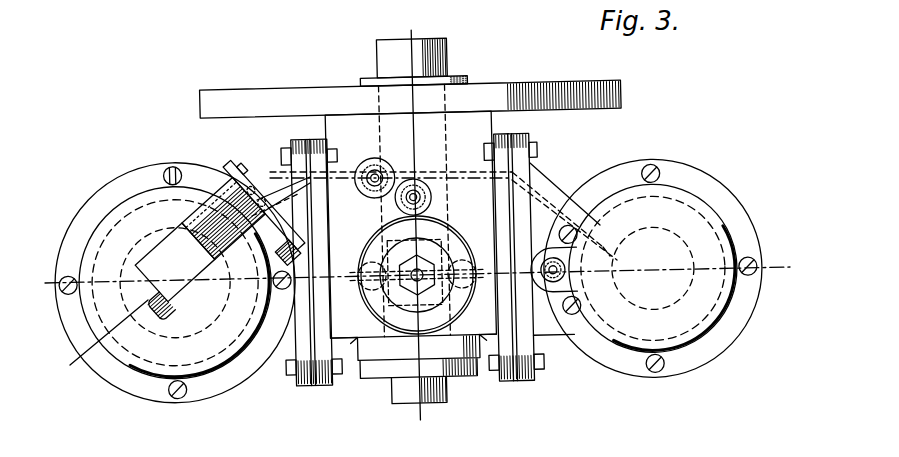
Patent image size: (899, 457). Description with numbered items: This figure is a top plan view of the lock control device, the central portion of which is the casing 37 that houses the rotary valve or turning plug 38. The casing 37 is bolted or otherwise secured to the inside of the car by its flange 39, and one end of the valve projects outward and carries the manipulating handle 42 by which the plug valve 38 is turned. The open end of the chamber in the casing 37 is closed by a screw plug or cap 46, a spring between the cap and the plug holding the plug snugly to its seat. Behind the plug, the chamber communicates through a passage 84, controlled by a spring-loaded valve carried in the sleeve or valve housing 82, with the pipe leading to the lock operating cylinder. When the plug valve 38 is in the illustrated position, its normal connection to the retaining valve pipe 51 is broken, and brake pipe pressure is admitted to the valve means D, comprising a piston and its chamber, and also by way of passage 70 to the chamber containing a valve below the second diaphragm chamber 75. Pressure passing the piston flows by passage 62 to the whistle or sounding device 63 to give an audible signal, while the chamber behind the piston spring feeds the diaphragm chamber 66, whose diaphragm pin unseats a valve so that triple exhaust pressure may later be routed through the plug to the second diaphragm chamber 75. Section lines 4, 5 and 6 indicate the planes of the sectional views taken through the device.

The section line 4- 4 is at (51, 290).
The vertical axis / section line 5- 5 is at (414, 228).
The section line 6-6 / control rod 6 is at (85, 380).
The casing 37 is at (412, 248).
The rotary valve or turning plug 38 is at (380, 153).
The flange 39 is at (590, 110).
The manipulating handle 42 is at (392, 50).
The screw plug or cap 46 is at (393, 395).
The retaining valve pipe 51 is at (433, 194).
The passage 62 is at (342, 172).
The whistle or sounding device 63 is at (430, 173).
The diaphragm chamber 66 is at (175, 283).
The passage 70 is at (608, 246).
The second diaphragm chamber 75 is at (716, 218).
The sleeve or valve housing 82 is at (441, 250).
The passage 84 is at (470, 341).
The valve means D is at (206, 212).